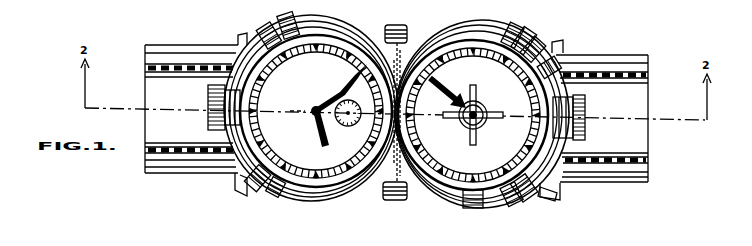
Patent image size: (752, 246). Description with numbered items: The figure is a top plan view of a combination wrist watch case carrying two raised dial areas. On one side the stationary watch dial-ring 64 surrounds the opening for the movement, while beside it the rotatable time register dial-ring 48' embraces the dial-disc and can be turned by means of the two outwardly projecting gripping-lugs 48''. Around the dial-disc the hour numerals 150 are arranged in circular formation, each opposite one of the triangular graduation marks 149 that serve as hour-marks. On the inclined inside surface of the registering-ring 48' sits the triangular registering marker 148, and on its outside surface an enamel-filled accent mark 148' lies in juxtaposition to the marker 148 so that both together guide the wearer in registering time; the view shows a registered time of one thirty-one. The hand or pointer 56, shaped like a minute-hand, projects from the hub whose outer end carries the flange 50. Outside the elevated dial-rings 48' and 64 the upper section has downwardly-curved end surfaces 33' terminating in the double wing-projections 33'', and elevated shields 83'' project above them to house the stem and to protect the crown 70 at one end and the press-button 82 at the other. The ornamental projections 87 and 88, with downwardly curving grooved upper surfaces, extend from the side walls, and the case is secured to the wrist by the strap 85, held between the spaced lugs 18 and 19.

The lug 18 is at (237, 187).
The lug 19 is at (560, 45).
The downwardly-curved end surface 33' is at (230, 32).
The double wing-projection 33'' is at (266, 24).
The time register dial-ring 48' is at (485, 126).
The gripping-lug 48'' is at (512, 133).
The flange 50 is at (563, 173).
The hand or pointer 56 is at (403, 199).
The watch dial-ring 64 is at (307, 190).
The crown 70 is at (210, 118).
The press-button 82 is at (585, 110).
The elevated shield 83'' is at (424, 144).
The strap 85 is at (197, 170).
The ornamental projection 87 is at (400, 33).
The ornamental projection 88 is at (393, 200).
The registering plate or graduation marker 148 is at (312, 105).
The accent mark 148' is at (313, 123).
The triangular graduation mark 149 is at (548, 204).
The hour numeral 150 is at (528, 196).